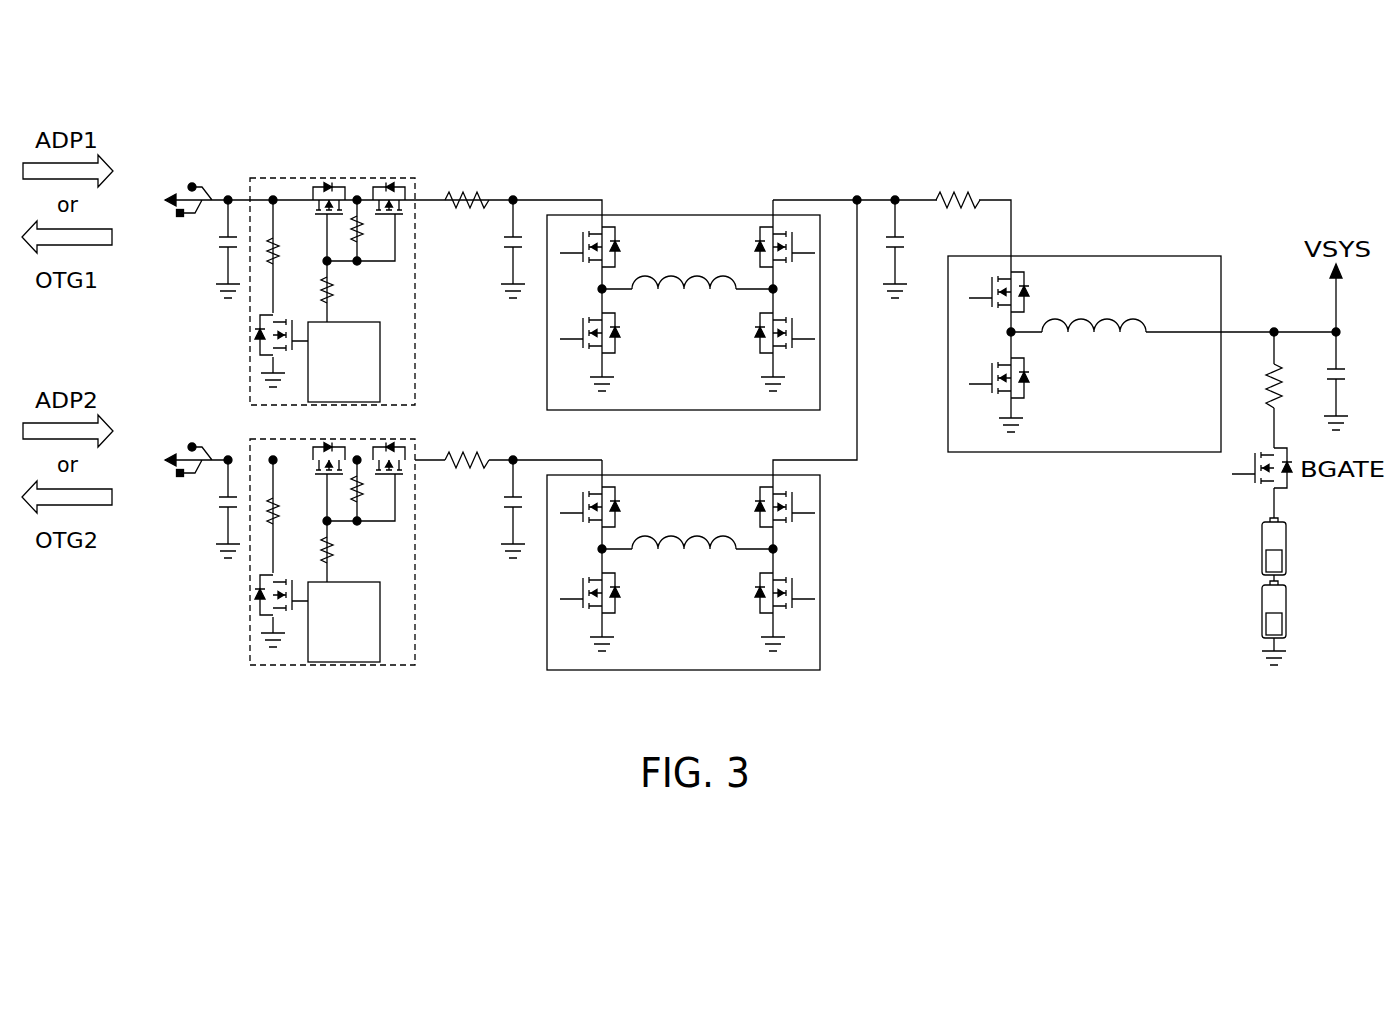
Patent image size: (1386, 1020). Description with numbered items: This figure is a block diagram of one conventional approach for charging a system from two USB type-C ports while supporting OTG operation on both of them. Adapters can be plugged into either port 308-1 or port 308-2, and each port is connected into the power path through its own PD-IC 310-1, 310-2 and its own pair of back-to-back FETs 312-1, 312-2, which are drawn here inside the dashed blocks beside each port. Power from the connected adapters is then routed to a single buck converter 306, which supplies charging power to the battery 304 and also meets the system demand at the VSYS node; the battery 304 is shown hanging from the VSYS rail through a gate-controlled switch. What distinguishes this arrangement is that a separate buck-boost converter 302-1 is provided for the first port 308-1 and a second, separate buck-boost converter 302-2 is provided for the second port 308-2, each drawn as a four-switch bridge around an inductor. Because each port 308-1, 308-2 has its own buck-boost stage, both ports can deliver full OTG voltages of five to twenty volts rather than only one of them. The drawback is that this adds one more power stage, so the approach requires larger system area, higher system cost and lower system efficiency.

The buck-boost converter 302-1 is at (678, 214).
The buck-boost converter 302-2 is at (822, 545).
The battery 304 is at (1243, 578).
The buck converter 306 is at (1093, 256).
The port 308-1 is at (210, 143).
The port 308-2 is at (193, 406).
The PD-IC 310-1 is at (380, 340).
The PD-IC 310-2 is at (380, 600).
The back-to-back FETs 312-1 is at (377, 178).
The back-to-back FETs 312-2 is at (392, 447).